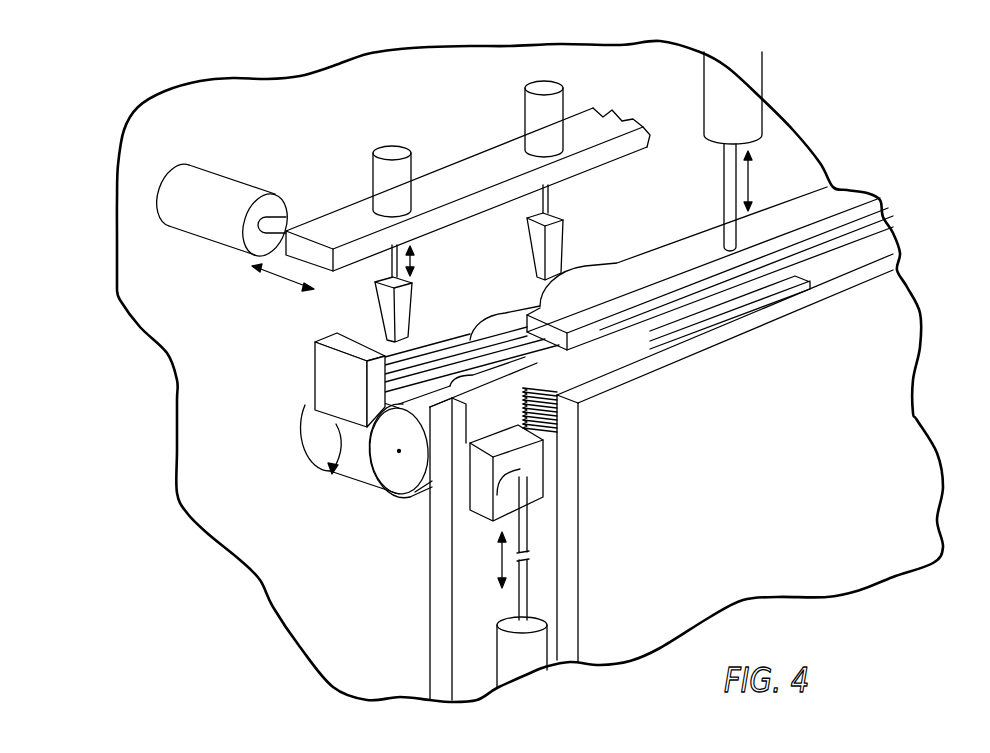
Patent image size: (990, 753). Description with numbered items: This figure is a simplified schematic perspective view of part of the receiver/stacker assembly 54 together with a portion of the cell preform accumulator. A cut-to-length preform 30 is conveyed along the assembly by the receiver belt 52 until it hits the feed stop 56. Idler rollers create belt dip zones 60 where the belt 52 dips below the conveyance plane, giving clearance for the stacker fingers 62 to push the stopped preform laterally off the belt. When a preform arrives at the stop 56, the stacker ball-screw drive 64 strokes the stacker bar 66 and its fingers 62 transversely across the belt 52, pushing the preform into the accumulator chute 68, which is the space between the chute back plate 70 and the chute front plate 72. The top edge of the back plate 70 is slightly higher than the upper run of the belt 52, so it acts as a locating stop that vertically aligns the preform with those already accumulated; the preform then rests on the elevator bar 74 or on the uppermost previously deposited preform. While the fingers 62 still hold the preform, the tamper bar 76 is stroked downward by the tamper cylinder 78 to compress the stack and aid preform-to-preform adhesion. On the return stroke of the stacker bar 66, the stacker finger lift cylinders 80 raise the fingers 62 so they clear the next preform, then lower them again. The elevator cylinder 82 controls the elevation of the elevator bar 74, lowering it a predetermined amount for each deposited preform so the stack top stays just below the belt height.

The receiver/stacker assembly 54 is at (142, 156).
The stacker ball-screw drive 64 is at (224, 188).
The stacker finger lift cylinders 80 is at (377, 180).
The stacker bar 66 is at (444, 182).
The tamper cylinder 78 is at (713, 92).
The tamper bar 76 is at (688, 256).
The preform 30 is at (748, 300).
The stacker fingers 62 is at (413, 307).
The belt dip zones 60 is at (394, 349).
The feed stop 56 is at (322, 367).
The receiver belt 52 is at (317, 460).
The accumulator chute 68 is at (458, 490).
The chute front plate 72 is at (436, 559).
The elevator cylinder 82 is at (503, 658).
The elevator bar 74 is at (553, 471).
The chute back plate 70 is at (877, 324).